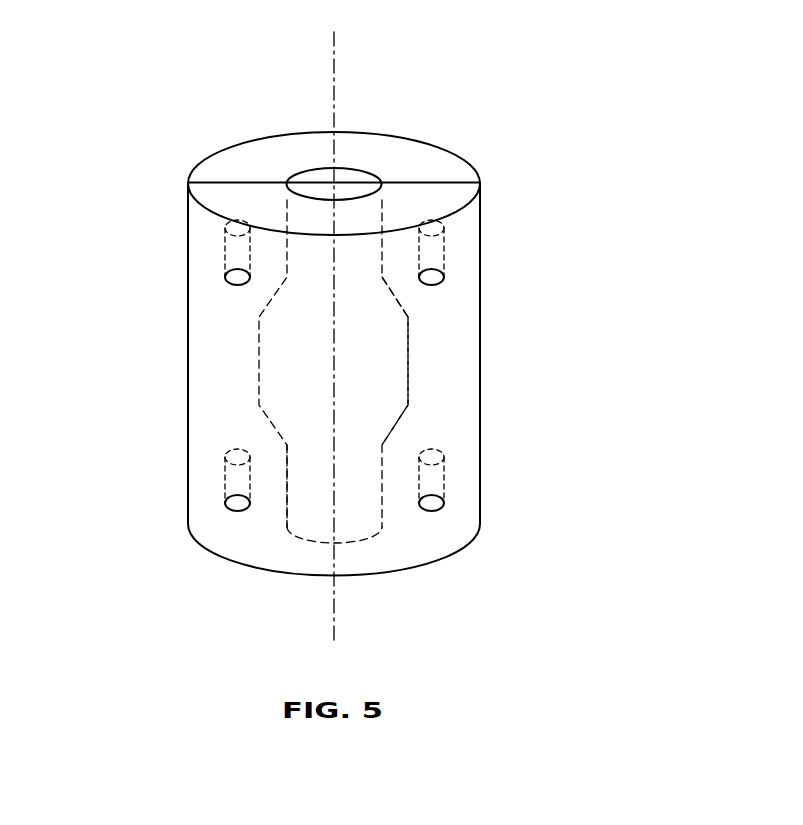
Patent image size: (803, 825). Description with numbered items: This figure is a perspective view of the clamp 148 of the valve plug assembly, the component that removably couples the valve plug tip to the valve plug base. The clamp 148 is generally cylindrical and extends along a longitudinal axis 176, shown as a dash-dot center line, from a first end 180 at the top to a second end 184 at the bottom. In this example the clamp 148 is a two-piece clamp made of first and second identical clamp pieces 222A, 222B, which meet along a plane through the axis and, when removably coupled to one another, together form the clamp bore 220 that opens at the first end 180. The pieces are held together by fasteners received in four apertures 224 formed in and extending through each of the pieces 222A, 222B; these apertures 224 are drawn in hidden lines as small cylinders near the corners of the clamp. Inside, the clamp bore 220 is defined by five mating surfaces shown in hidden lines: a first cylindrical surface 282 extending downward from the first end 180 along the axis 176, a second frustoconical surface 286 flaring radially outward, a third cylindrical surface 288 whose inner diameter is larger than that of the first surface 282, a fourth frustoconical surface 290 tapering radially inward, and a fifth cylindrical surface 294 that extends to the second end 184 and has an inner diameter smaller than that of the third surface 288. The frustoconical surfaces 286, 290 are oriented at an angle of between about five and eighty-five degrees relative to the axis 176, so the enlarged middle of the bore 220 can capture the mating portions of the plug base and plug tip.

The clamp 148 is at (529, 133).
The longitudinal axis 176 is at (335, 45).
The first end 180 is at (227, 145).
The second end 184 is at (410, 570).
The clamp bore 220 is at (358, 178).
The first clamp piece 222A is at (278, 162).
The second clamp piece 222B is at (207, 200).
The apertures 224 is at (235, 285).
The first cylindrical surface 282 is at (287, 252).
The second frustoconical surface 286 is at (400, 298).
The third cylindrical surface 288 is at (410, 365).
The fourth frustoconical surface 290 is at (400, 422).
The fifth cylindrical surface 294 is at (287, 513).